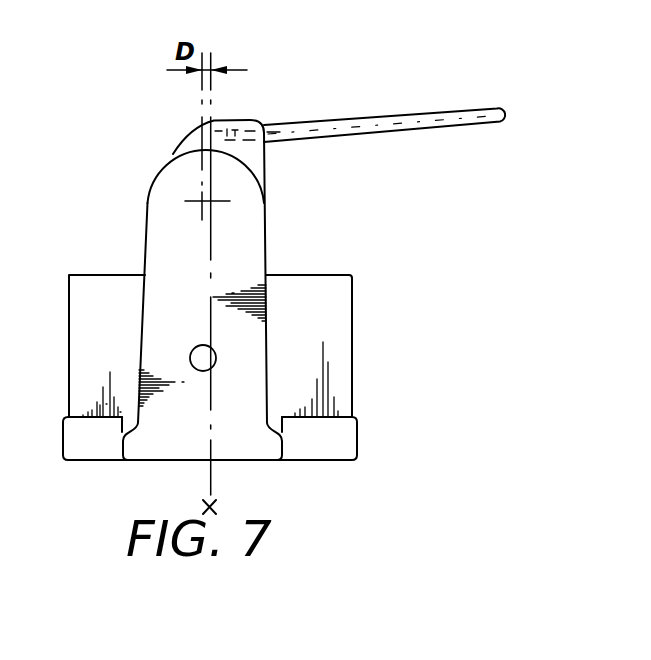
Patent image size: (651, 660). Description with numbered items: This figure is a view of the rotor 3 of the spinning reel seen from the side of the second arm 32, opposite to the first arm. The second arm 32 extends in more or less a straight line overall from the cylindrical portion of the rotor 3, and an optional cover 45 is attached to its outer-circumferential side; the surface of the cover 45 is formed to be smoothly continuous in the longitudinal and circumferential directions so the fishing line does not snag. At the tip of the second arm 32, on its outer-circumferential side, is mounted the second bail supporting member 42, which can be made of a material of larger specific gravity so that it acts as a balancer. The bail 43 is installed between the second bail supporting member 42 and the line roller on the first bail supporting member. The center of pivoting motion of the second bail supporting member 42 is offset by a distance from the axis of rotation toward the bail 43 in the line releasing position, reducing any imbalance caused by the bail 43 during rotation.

The rotor 3 is at (352, 298).
The second bail supporting member 42 is at (198, 139).
The bail 43 is at (451, 109).
The cover 45 is at (267, 296).
The second arm 32 is at (254, 228).